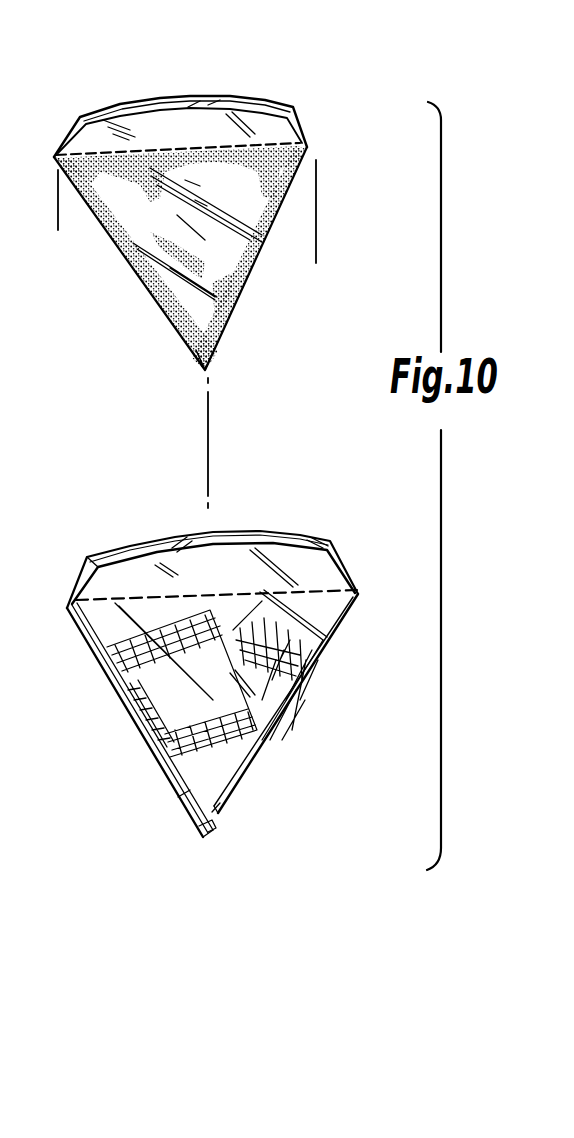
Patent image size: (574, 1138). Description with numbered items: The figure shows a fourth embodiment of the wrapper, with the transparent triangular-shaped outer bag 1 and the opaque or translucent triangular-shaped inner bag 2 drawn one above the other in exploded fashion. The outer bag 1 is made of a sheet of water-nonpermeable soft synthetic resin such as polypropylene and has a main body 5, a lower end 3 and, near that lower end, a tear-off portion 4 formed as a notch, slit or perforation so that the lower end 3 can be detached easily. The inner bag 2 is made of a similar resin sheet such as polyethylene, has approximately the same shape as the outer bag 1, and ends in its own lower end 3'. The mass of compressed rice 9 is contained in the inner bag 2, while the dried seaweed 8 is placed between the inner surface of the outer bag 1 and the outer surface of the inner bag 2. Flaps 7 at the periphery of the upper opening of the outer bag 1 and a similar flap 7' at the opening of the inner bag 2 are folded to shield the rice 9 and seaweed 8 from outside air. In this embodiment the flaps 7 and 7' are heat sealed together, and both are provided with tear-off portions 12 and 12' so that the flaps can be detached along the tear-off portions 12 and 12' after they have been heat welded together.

The outer bag 1 is at (327, 600).
The inner bag 2 is at (217, 258).
The lower end of the outer bag 3 is at (225, 832).
The lower end of the inner bag 3' is at (230, 372).
The tear-off portion 4 is at (180, 798).
The main body 5 is at (327, 623).
The flaps 7 is at (208, 519).
The flap of the inner bag 7' is at (186, 95).
The dried seaweed 8 is at (148, 702).
The mass of compressed rice 9 is at (149, 288).
The tear-off portion of the outer bag flaps 12 is at (216, 550).
The tear-off portion of the inner bag flaps 12' is at (178, 88).